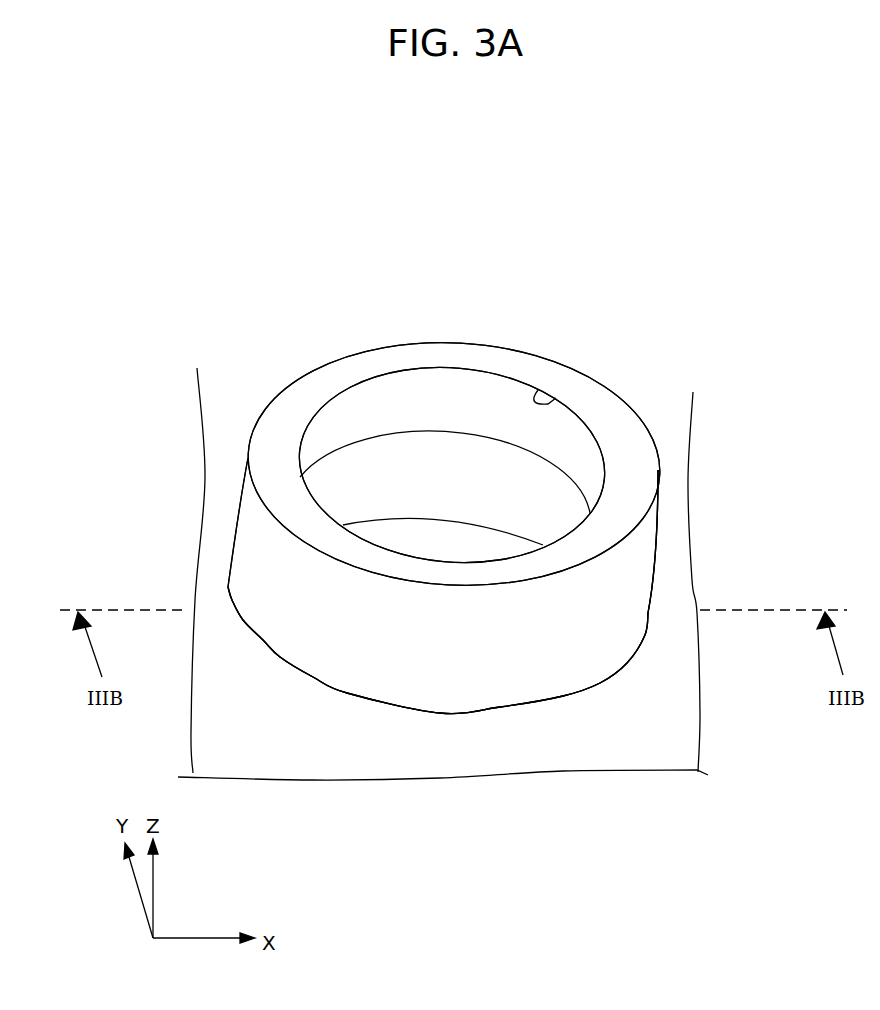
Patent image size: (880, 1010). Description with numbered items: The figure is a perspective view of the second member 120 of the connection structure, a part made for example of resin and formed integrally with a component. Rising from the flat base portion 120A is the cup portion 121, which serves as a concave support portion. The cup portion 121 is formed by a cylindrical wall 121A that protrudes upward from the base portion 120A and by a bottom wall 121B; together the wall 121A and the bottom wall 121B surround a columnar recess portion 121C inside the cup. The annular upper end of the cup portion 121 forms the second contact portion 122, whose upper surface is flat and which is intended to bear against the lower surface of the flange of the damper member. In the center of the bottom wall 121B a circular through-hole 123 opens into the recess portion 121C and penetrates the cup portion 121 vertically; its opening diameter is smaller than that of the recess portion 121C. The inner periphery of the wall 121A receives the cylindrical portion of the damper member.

The second member 120 is at (742, 108).
The base portion 120A is at (245, 670).
The cup portion 121 is at (585, 593).
The wall 121A is at (570, 625).
The bottom wall 121B is at (407, 533).
The recess portion 121C is at (538, 390).
The second contact portion 122 is at (613, 450).
The through-hole 123 is at (430, 552).